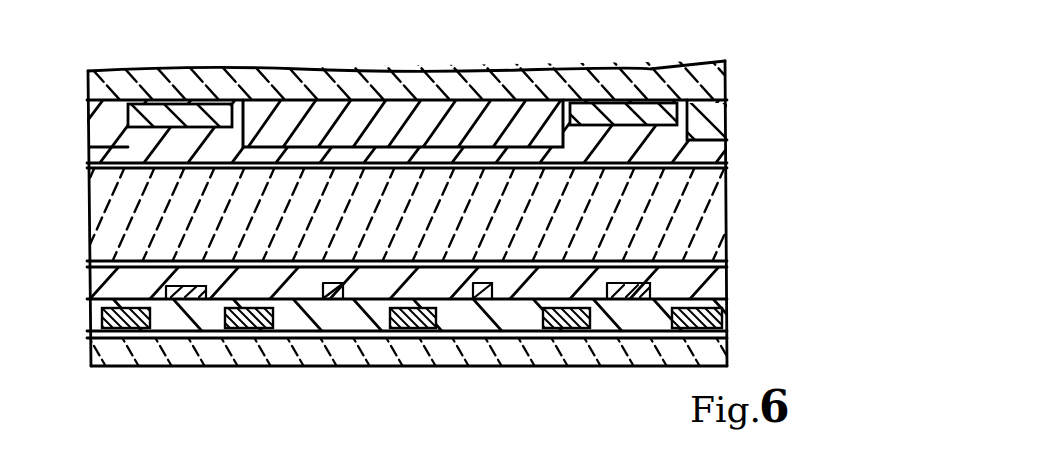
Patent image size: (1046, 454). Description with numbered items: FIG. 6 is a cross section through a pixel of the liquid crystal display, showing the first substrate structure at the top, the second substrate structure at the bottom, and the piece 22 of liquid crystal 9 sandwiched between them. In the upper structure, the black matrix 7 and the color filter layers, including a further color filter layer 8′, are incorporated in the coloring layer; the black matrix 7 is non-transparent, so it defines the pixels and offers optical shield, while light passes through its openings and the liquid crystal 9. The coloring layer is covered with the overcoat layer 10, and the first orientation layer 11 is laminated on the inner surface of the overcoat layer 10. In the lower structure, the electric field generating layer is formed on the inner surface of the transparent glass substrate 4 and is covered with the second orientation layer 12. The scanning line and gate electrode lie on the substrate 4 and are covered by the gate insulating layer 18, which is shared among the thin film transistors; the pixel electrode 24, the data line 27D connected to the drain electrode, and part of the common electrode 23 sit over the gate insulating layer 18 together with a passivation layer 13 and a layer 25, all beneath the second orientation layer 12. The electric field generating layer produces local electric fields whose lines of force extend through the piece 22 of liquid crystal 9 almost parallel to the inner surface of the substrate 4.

The black matrix 7 is at (188, 112).
The gate electrode 8′ is at (706, 115).
The overcoat layer 10 is at (727, 148).
The first orientation layer 11 is at (727, 168).
The liquid crystal 9 is at (727, 210).
The piece of liquid crystal 22 is at (400, 232).
The second orientation layer 12 is at (727, 260).
The passivation layer 13 is at (727, 282).
The data line 27D is at (192, 292).
The insulating layer 25 is at (727, 305).
The common electrode 23 is at (560, 328).
The gate insulating layer 18 is at (727, 333).
The transparent glass substrate 4 is at (727, 350).
The pixel electrode 24 is at (335, 279).